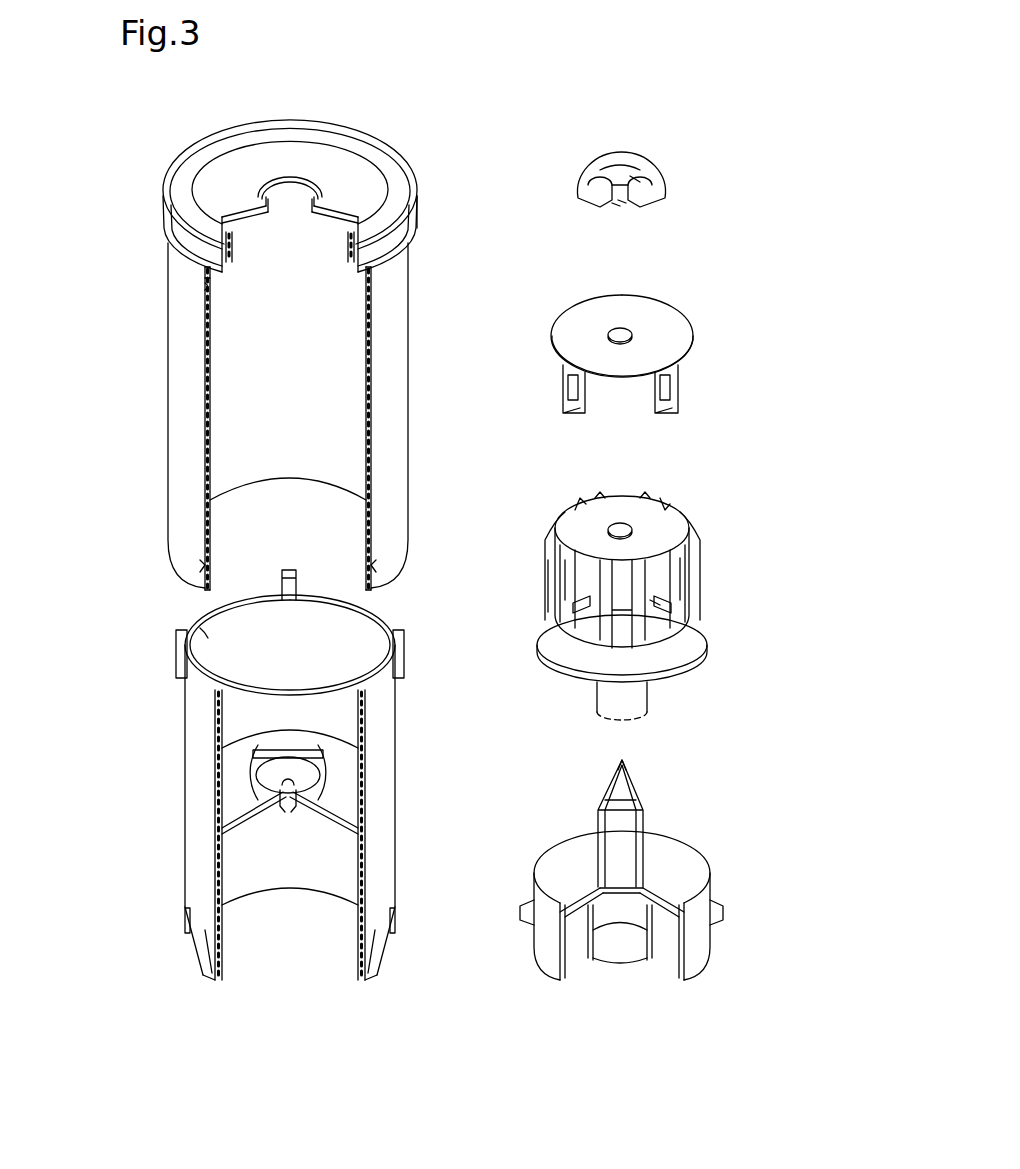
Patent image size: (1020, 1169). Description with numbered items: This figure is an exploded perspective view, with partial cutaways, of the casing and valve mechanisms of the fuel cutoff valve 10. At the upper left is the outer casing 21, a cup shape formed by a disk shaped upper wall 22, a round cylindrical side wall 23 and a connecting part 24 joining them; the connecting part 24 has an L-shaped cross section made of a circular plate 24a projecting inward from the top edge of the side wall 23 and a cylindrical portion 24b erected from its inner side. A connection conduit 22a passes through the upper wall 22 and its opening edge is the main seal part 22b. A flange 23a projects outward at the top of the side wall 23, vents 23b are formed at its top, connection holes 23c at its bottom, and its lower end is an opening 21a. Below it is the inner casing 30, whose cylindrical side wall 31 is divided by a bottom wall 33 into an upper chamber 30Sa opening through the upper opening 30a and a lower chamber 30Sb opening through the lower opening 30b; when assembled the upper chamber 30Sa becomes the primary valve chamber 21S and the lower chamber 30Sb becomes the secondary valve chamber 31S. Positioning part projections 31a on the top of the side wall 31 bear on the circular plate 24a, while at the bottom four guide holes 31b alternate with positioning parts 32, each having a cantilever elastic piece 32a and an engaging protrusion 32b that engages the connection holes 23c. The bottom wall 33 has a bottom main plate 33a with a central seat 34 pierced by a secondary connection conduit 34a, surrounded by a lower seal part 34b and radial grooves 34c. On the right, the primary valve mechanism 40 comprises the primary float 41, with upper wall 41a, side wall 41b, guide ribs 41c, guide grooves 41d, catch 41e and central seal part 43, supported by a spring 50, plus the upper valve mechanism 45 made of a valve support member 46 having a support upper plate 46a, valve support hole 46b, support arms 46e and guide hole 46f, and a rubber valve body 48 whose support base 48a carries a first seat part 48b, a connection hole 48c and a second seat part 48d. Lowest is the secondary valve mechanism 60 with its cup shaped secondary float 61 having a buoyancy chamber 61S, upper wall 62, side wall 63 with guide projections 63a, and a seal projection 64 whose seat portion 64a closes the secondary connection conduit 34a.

The fuel cutoff valve 10 is at (425, 92).
The outer casing 21 is at (97, 198).
The opening 21a is at (290, 482).
The primary valve chamber 21S is at (340, 732).
The upper wall 22 is at (220, 188).
The connection conduit 22a is at (290, 184).
The main seal part 22b is at (318, 215).
The side wall 23 is at (168, 372).
The flange 23a is at (418, 215).
The vents 23b is at (208, 288).
The connection holes 23c is at (205, 566).
The connecting part 24 is at (195, 232).
The circular plate 24a is at (210, 283).
The cylindrical portion 24b is at (232, 248).
The inner casing 30 is at (112, 732).
The upper opening 30a is at (205, 630).
The lower opening 30b is at (290, 892).
The upper chamber 30Sa is at (268, 665).
The lower chamber 30Sb is at (268, 883).
The side wall 31 is at (185, 738).
The positioning part projections 31a is at (398, 650).
The guide holes 31b is at (396, 916).
The secondary valve chamber 31S is at (340, 860).
The positioning parts 32 is at (132, 938).
The cantilever elastic piece 32a is at (200, 962).
The engaging protrusion 32b is at (203, 978).
The bottom wall 33 is at (225, 798).
The bottom main plate 33a is at (245, 748).
The seat 34 is at (295, 755).
The secondary connection conduit 34a is at (284, 806).
The lower seal part 34b is at (295, 806).
The grooves 34c is at (280, 752).
The primary valve mechanism 40 is at (796, 124).
The primary float 41 is at (776, 510).
The upper wall 41a is at (675, 525).
The side wall 41b is at (683, 560).
The guide ribs 41c is at (550, 582).
The guide grooves 41d is at (578, 572).
The catch 41e is at (672, 610).
The seal part 43 is at (618, 528).
The upper valve mechanism 45 is at (808, 187).
The valve support member 46 is at (761, 302).
The support upper plate 46a is at (668, 320).
The valve support hole 46b is at (632, 336).
The support arms 46e is at (680, 372).
The guide hole 46f is at (672, 395).
The rubber valve body 48 is at (761, 133).
The support base 48a is at (640, 182).
The first seat part 48b is at (635, 168).
The connection hole 48c is at (632, 200).
The second seat part 48d is at (622, 205).
The spring 50 is at (650, 695).
The secondary valve mechanism 60 is at (793, 782).
The secondary float 61 is at (766, 785).
The buoyancy chamber 61S is at (622, 945).
The upper wall 62 is at (688, 860).
The side wall 63 is at (690, 892).
The guide projections 63a is at (718, 920).
The seal projection 64 is at (645, 820).
The seat portion 64a is at (620, 762).